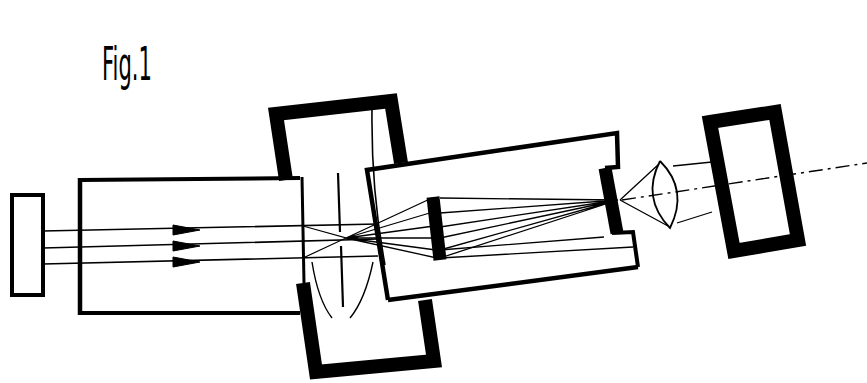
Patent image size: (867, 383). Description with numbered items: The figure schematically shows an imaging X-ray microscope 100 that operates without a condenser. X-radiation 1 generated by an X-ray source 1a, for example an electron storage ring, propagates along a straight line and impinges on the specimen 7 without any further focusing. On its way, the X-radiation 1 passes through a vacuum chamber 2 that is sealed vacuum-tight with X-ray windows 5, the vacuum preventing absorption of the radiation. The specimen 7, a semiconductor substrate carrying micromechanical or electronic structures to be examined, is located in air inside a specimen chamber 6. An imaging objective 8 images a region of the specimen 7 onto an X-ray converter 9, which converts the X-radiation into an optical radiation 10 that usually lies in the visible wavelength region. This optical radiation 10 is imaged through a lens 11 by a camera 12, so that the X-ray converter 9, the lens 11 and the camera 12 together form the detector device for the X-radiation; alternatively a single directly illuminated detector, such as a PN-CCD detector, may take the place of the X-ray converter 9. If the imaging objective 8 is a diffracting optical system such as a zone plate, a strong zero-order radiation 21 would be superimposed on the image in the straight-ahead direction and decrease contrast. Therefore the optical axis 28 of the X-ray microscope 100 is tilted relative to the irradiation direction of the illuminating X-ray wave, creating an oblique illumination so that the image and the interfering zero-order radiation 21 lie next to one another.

The X-ray source 1a is at (28, 204).
The X-radiation 1 is at (118, 262).
The vacuum chamber 2 is at (215, 320).
The X-ray window 5 is at (73, 272).
The specimen chamber 6 is at (298, 97).
The specimen 7 is at (332, 167).
The imaging objective 8 is at (372, 108).
The X-ray converter 9 is at (587, 206).
The optical radiation 10 is at (644, 173).
The lens 11 is at (683, 162).
The camera 12 is at (748, 100).
The zero-order radiation 21 is at (598, 247).
The optical axis 28 is at (840, 168).
The X-ray microscope 100 is at (565, 342).